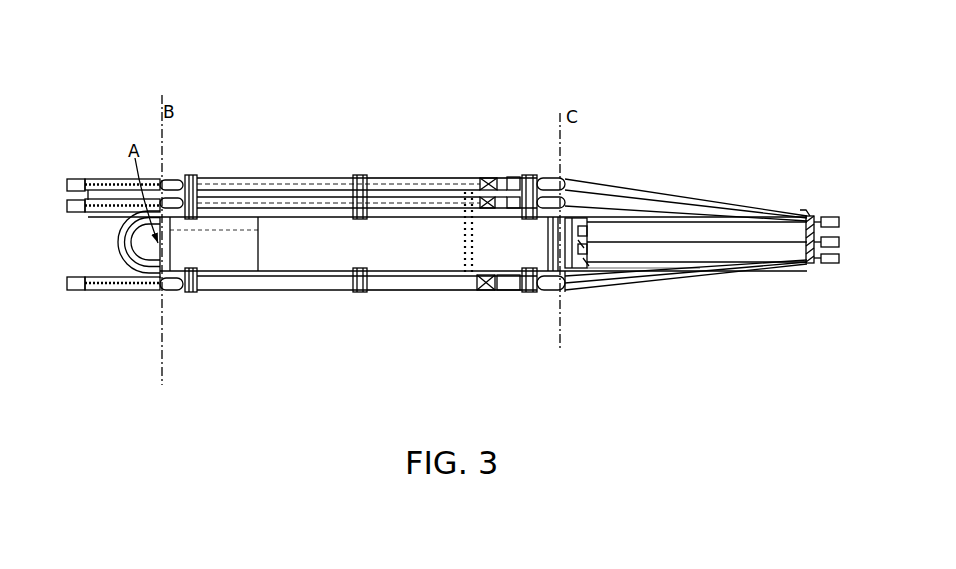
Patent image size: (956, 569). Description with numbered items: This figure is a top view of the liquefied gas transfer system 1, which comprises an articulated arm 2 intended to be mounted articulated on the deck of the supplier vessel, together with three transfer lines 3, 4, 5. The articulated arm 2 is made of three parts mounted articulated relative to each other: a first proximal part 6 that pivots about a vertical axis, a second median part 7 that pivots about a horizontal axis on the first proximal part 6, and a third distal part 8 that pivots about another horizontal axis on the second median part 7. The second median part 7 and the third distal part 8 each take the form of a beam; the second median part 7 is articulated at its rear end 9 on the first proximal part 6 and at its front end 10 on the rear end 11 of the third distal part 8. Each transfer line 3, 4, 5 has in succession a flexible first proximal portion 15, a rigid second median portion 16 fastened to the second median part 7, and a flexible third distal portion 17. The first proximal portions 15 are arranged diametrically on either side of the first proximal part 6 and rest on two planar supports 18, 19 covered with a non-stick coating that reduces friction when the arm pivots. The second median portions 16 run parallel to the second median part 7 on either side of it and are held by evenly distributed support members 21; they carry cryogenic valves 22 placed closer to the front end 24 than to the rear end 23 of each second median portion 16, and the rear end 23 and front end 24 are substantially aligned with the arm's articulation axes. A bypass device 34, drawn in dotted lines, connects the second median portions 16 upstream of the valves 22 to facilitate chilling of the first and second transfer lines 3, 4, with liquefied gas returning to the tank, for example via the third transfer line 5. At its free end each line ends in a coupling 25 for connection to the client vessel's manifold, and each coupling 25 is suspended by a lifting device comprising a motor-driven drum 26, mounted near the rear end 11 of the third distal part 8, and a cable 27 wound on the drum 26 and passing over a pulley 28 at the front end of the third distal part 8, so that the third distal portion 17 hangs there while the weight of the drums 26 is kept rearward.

The transfer system 1 is at (601, 103).
The articulated arm 2 is at (427, 266).
The first transfer line 3 is at (289, 183).
The second transfer line 4 is at (244, 198).
The third transfer line 5 is at (310, 301).
The first proximal part 6 is at (140, 279).
The second median part 7 is at (377, 256).
The third distal part 8 is at (709, 233).
The rear end of the second median part 9 is at (176, 224).
The front end of the second median part 10 is at (544, 227).
The rear end of the third distal part 11 is at (569, 227).
The first proximal portion 15 is at (105, 190).
The second median portion 16 is at (400, 180).
The third distal portion 17 is at (650, 215).
The planar support 18 is at (120, 195).
The planar support 19 is at (113, 283).
The support member 21 is at (192, 294).
The cryogenic valve 22 is at (484, 196).
The rear end of the second median portion 23 is at (160, 290).
The front end of the second median portion 24 is at (565, 298).
The coupling 25 is at (828, 266).
The drum 26 is at (578, 245).
The cable 27 is at (700, 263).
The pulley 28 is at (810, 252).
The bypass device 34 is at (457, 233).